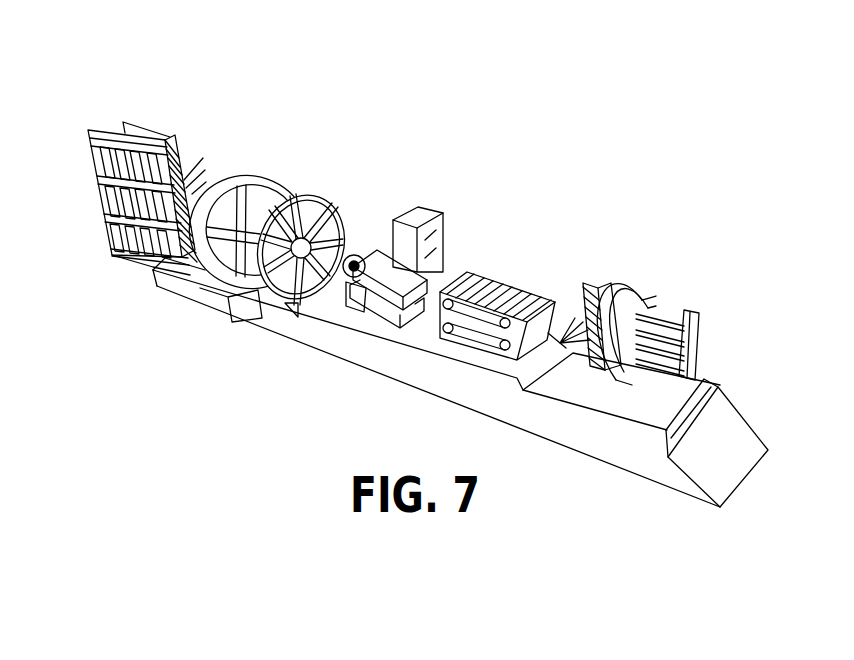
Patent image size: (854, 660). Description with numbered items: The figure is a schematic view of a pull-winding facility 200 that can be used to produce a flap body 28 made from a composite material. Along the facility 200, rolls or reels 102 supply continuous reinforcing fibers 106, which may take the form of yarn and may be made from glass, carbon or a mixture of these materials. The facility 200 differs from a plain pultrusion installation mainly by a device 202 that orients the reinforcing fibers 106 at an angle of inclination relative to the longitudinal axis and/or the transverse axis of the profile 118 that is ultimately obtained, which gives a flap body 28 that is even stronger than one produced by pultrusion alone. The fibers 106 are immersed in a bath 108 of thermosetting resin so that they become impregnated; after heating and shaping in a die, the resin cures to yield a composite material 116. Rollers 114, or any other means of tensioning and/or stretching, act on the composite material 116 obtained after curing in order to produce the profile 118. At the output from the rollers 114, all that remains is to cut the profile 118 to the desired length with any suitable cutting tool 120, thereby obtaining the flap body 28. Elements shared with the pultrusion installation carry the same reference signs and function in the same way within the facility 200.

The pull-winding facility 200 is at (381, 148).
The flap body 28 is at (653, 380).
The rolls or reels 102 is at (118, 147).
The reinforcing fibers 106 is at (200, 202).
The device 202 is at (253, 262).
The bath 108 is at (373, 303).
The composite material 116 is at (430, 313).
The rollers 114 is at (497, 283).
The profile 118 is at (562, 340).
The cutting tool 120 is at (648, 297).